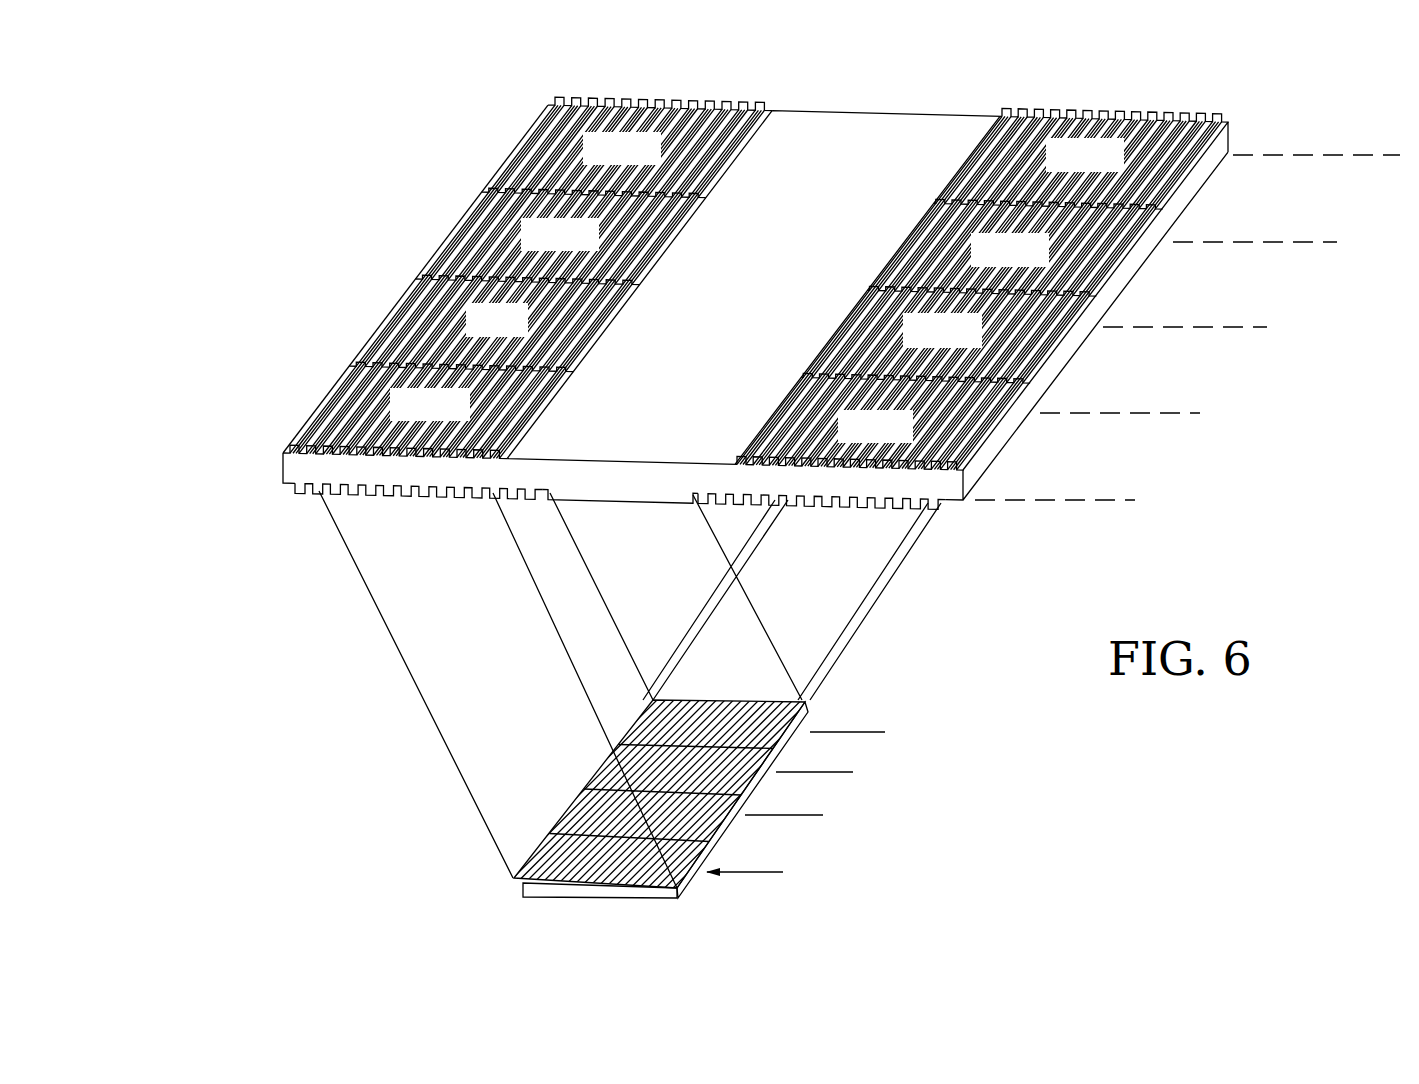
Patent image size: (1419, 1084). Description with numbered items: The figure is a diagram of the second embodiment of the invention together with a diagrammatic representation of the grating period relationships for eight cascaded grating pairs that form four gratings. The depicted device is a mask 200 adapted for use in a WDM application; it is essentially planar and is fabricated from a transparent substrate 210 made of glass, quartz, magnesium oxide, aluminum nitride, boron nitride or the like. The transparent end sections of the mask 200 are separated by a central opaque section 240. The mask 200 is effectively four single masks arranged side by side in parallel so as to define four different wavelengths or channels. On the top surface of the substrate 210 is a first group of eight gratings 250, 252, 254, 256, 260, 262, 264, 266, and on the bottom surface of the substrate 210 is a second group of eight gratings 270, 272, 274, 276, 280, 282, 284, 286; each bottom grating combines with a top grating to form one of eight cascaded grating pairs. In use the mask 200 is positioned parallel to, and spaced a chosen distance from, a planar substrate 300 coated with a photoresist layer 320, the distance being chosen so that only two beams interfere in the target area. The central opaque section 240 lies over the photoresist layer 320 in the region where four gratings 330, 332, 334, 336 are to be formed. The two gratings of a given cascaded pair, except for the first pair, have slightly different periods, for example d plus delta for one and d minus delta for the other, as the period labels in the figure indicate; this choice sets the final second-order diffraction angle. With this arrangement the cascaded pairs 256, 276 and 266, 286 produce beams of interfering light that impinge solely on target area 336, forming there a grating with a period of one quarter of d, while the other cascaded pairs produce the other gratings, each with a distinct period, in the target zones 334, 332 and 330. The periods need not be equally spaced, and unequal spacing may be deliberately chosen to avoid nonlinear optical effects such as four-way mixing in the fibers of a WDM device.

The mask 200 is at (369, 214).
The transparent substrate 210 is at (284, 467).
The central opaque section 240 is at (880, 102).
The grating 250 is at (478, 260).
The grating 252 is at (467, 250).
The grating 254 is at (394, 337).
The grating 256 is at (341, 430).
The grating 260 is at (1036, 313).
The grating 262 is at (1145, 207).
The grating 264 is at (1047, 317).
The grating 266 is at (928, 462).
The grating 270 is at (672, 95).
The grating 272 is at (387, 260).
The grating 274 is at (314, 357).
The grating 276 is at (298, 501).
The grating 280 is at (1183, 213).
The grating 282 is at (1120, 293).
The grating 284 is at (1062, 380).
The grating 286 is at (1040, 455).
The planar substrate 300 is at (728, 784).
The photoresist layer 320 is at (810, 690).
The grating (target zone) 330 is at (663, 723).
The grating (target zone) 332 is at (617, 773).
The grating (target zone) 334 is at (592, 817).
The grating (target area) 336 is at (560, 857).